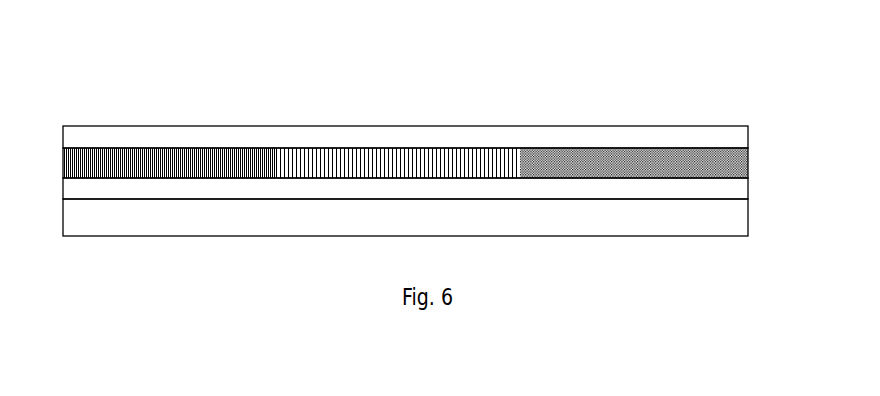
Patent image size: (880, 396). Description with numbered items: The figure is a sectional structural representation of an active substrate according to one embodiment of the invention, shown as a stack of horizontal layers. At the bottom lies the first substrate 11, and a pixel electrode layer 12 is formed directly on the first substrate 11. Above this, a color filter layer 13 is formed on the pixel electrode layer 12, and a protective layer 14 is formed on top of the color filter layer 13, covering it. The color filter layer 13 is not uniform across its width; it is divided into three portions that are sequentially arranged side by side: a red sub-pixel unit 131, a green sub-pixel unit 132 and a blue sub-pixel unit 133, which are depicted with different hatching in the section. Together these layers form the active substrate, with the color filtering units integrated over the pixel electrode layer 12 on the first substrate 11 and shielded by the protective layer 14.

The first substrate 11 is at (737, 226).
The pixel electrode layer 12 is at (737, 189).
The color filter layer 13 is at (405, 121).
The red sub-pixel unit 131 is at (128, 157).
The green sub-pixel unit 132 is at (342, 157).
The blue sub-pixel unit 133 is at (634, 138).
The protective layer 14 is at (737, 134).